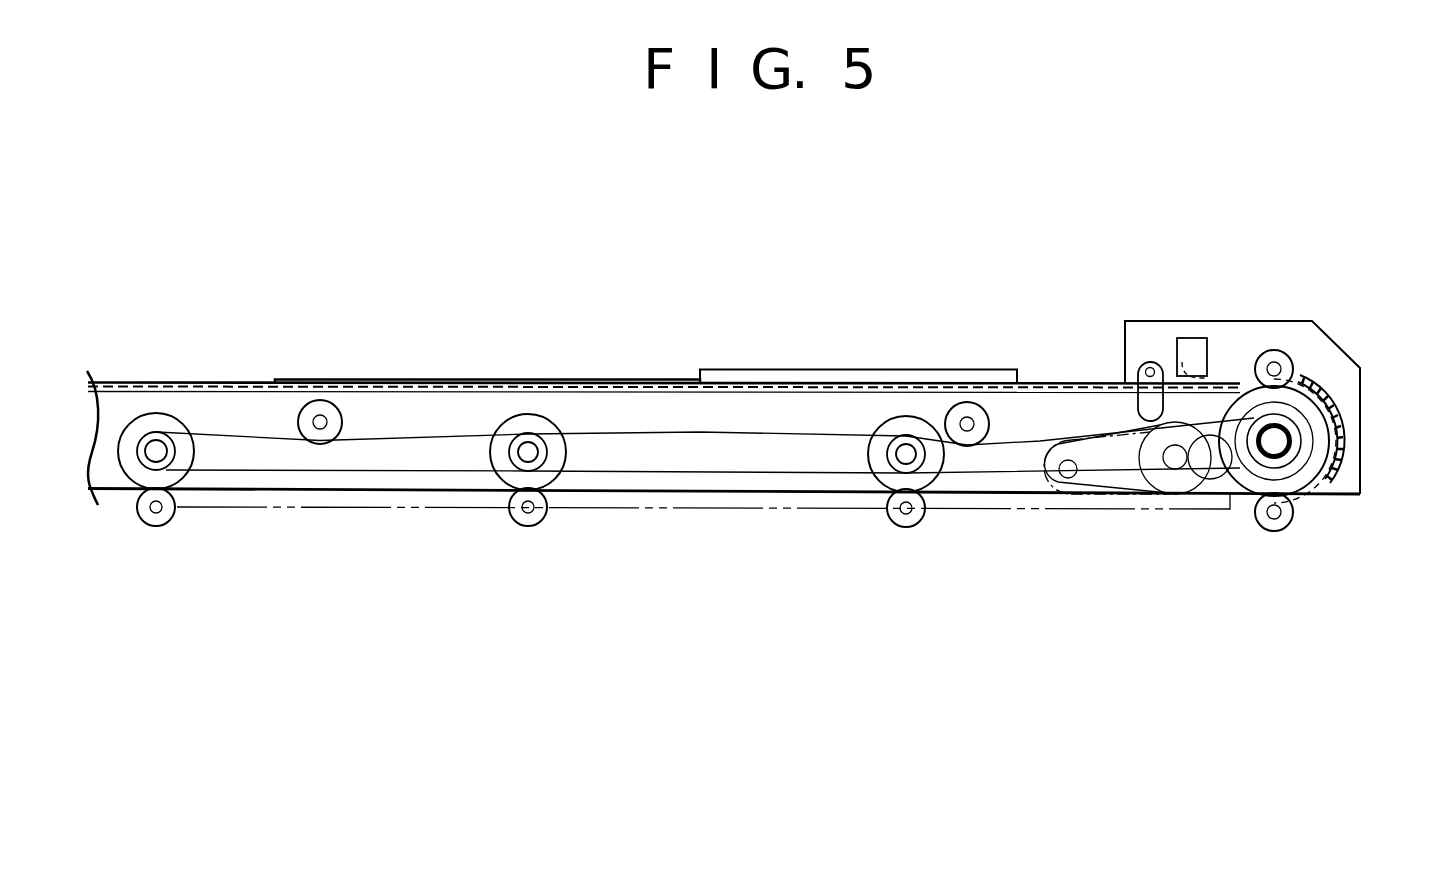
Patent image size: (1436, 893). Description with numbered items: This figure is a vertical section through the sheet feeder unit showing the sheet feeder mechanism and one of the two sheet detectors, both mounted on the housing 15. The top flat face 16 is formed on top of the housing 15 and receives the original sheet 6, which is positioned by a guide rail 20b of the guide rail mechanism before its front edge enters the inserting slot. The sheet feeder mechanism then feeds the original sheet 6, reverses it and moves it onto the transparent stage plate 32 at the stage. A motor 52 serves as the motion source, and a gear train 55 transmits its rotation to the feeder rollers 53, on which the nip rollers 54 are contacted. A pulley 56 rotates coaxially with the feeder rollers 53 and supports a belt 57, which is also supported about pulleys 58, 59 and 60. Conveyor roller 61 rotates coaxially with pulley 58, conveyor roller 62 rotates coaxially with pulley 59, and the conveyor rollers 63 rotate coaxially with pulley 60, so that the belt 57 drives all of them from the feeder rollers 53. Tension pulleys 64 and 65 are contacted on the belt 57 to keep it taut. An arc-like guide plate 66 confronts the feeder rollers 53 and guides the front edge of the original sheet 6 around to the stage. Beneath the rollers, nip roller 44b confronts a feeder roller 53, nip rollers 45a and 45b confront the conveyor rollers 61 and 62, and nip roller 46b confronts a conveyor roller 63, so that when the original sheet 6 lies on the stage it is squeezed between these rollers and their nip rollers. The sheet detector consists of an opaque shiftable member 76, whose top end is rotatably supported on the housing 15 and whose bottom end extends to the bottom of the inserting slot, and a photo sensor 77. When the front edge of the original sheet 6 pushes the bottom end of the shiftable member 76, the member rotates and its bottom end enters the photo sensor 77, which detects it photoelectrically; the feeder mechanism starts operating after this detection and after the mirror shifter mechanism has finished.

The original sheet 6 is at (498, 380).
The housing 15 is at (1340, 340).
The top flat face 16 is at (215, 381).
The guide rail 20b is at (846, 380).
The stage plate 32 is at (724, 511).
The nip roller 44b is at (1276, 531).
The nip roller 45a is at (905, 521).
The nip roller 45b is at (529, 526).
The nip roller 46b is at (160, 522).
The motor 52 is at (1035, 490).
The feeder roller 53 is at (1299, 422).
The nip roller 54 is at (1279, 352).
The gear train 55 is at (1207, 490).
The pulley 56 is at (1266, 424).
The belt 57 is at (369, 474).
The pulley 58 is at (890, 456).
The pulley 59 is at (545, 452).
The pulley 60 is at (156, 489).
The conveyor roller 61 is at (868, 487).
The conveyor roller 62 is at (557, 489).
The conveyor roller 63 is at (176, 425).
The tension pulley 64 is at (987, 425).
The tension pulley 65 is at (330, 421).
The arc-like guide plate 66 is at (1350, 446).
The shiftable member 76 is at (1138, 381).
The photo sensor 77 is at (1191, 338).